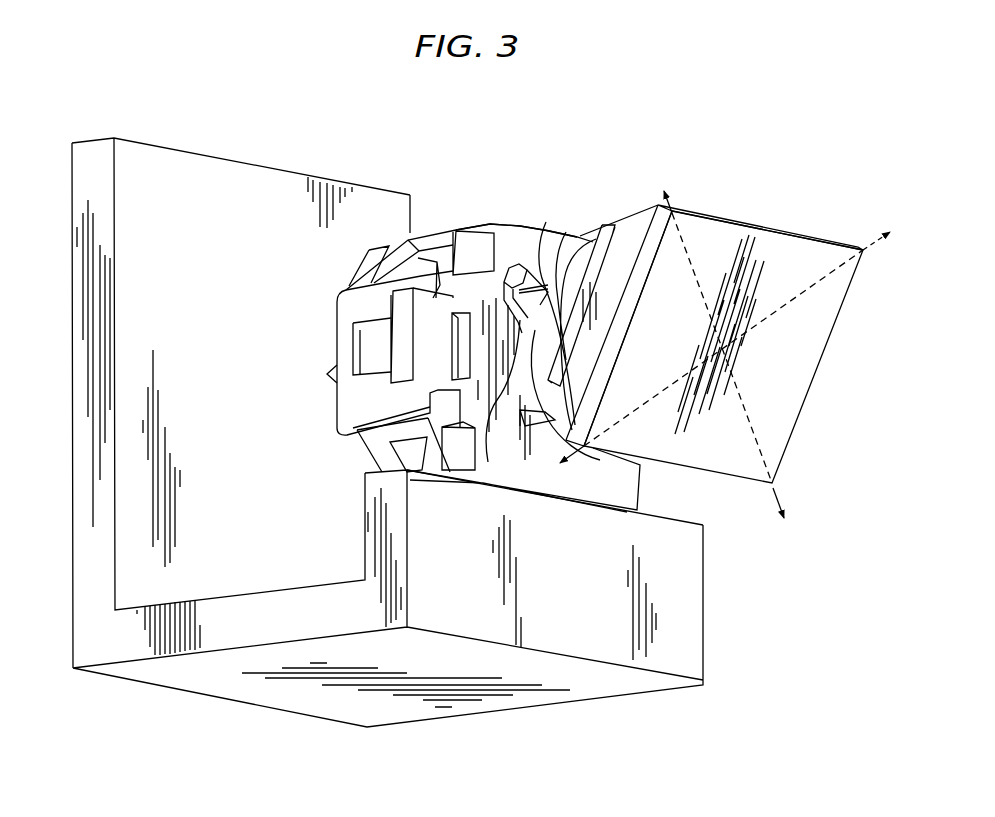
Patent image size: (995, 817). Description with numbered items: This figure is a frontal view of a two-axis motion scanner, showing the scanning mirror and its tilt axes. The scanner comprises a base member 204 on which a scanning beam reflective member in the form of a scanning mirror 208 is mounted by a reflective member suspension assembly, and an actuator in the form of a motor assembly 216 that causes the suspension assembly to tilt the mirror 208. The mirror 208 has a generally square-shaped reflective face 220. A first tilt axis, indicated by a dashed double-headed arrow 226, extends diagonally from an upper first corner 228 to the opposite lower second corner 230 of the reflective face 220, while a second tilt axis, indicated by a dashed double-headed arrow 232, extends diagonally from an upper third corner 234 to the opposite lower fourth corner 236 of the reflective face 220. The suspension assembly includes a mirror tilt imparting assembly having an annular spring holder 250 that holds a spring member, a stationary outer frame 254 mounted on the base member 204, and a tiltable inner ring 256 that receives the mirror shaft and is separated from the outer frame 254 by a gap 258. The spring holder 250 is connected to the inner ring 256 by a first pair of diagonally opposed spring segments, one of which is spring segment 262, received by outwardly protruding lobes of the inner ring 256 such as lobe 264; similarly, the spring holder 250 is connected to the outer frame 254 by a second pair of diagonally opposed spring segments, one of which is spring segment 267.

The base member 204 is at (93, 587).
The motor assembly 216 is at (425, 217).
The gap 258 is at (508, 270).
The stationary outer frame 254 is at (495, 235).
The lobe 264 is at (540, 252).
The spring segment 262 is at (566, 268).
The spring segment 267 is at (562, 440).
The tiltable inner ring 256 is at (487, 462).
The scanning mirror 208 is at (728, 351).
The reflective face 220 is at (780, 405).
The second tilt axis 232 is at (818, 283).
The spring holder 250 is at (616, 230).
The first corner 228 is at (683, 204).
The third corner 234 is at (864, 241).
The first tilt axis 226 is at (763, 498).
The second corner 230 is at (757, 491).
The fourth corner 236 is at (588, 457).